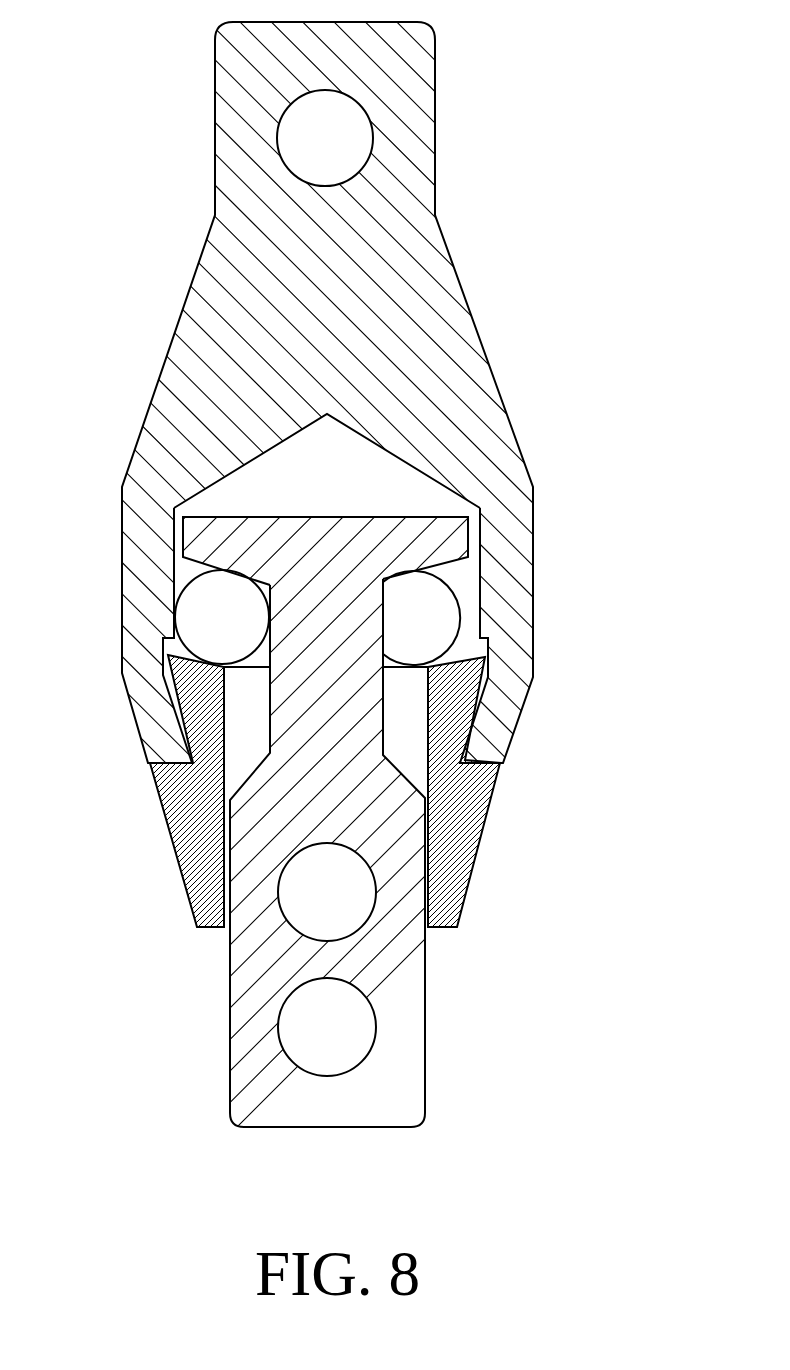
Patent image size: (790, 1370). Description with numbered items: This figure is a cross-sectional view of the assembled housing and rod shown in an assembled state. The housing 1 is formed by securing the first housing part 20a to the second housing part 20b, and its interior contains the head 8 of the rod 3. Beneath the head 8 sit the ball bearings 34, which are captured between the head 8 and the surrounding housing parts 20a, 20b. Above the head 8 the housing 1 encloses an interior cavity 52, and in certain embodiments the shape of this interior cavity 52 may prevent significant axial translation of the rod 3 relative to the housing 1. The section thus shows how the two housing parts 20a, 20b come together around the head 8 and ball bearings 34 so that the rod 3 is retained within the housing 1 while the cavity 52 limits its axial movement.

The housing 1 is at (578, 532).
The rod 3 is at (252, 983).
The head 8 is at (208, 540).
The first housing part 20a is at (500, 302).
The second housing part 20b is at (505, 827).
The ball bearings 34 is at (193, 617).
The interior cavity 52 is at (375, 477).